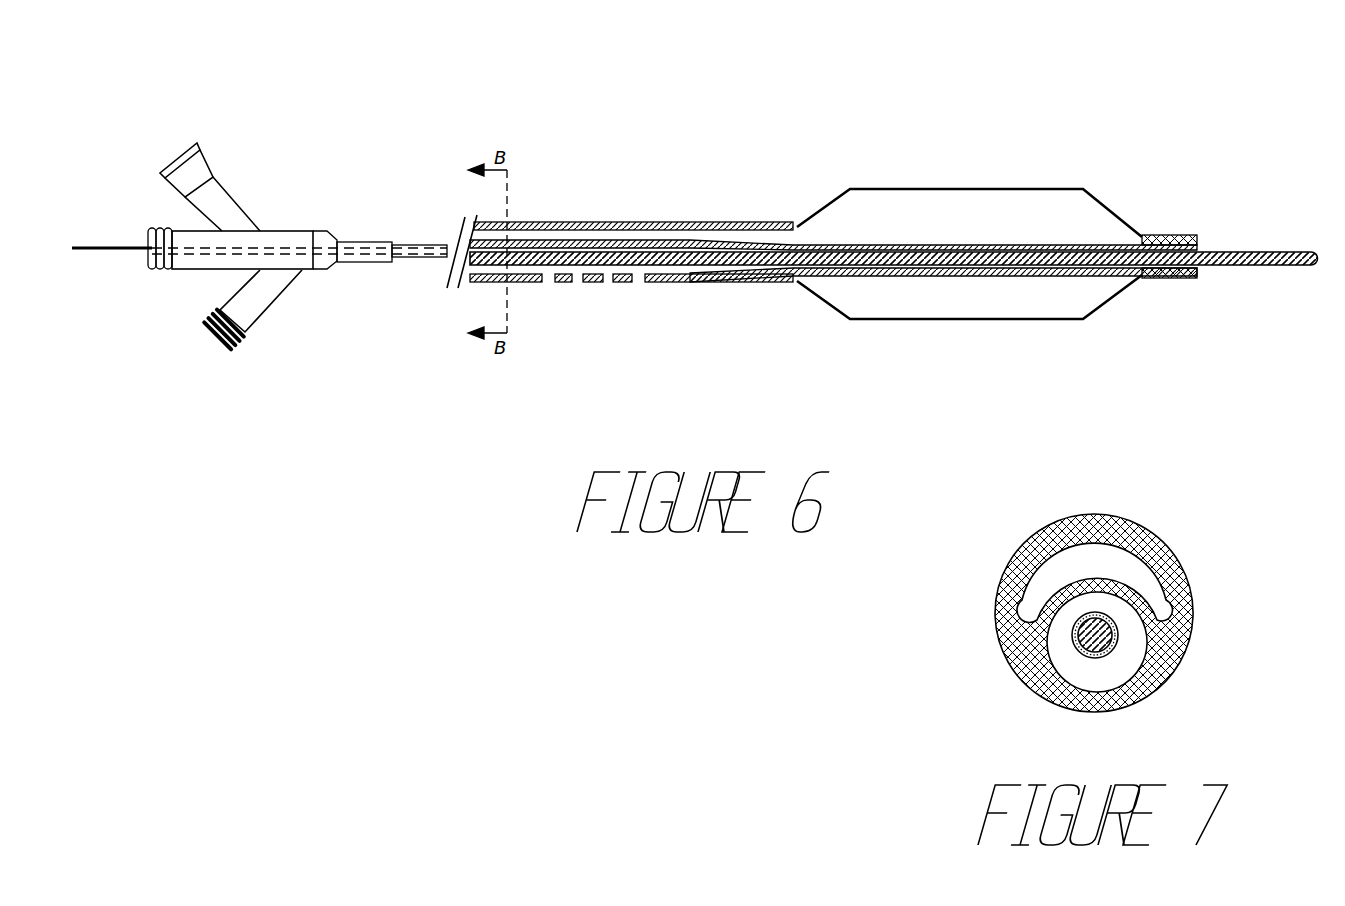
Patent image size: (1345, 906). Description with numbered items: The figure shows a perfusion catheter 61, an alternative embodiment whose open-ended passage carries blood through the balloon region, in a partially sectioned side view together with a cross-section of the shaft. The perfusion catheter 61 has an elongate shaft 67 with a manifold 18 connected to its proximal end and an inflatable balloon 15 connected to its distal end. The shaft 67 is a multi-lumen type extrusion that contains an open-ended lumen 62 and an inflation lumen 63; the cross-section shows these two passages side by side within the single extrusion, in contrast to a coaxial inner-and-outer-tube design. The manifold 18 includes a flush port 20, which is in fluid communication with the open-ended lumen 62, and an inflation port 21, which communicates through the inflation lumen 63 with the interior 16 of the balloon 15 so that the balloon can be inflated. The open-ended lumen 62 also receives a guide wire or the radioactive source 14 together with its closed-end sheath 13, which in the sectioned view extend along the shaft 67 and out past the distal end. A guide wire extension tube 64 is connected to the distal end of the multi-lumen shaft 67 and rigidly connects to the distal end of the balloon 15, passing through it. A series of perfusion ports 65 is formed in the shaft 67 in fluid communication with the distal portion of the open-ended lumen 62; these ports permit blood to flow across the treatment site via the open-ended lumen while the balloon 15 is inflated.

In FIG. 6, the perfusion catheter 61 is at (730, 85).
In FIG. 6, the manifold 18 is at (291, 156).
In FIG. 6, the flush port 20 is at (223, 180).
In FIG. 6, the inflation port 21 is at (270, 308).
In FIG. 6, the radioactive source 14 is at (88, 250).
In FIG. 7, the radioactive source 14 is at (1077, 620).
In FIG. 6, the closed-end sheath 13 is at (132, 250).
In FIG. 7, the closed-end sheath 13 is at (1073, 643).
In FIG. 6, the interior 16 is at (182, 270).
In FIG. 6, the inflatable balloon 15 is at (983, 320).
In FIG. 6, the guide wire extension tube 64 is at (1027, 243).
In FIG. 6, the elongate shaft 67 is at (597, 212).
In FIG. 7, the elongate shaft 67 is at (1159, 523).
In FIG. 6, the inflation lumen 63 is at (653, 236).
In FIG. 7, the inflation lumen 63 is at (1155, 585).
In FIG. 6, the perfusion ports 65 is at (548, 283).
In FIG. 7, the open-ended lumen 62 is at (1173, 648).